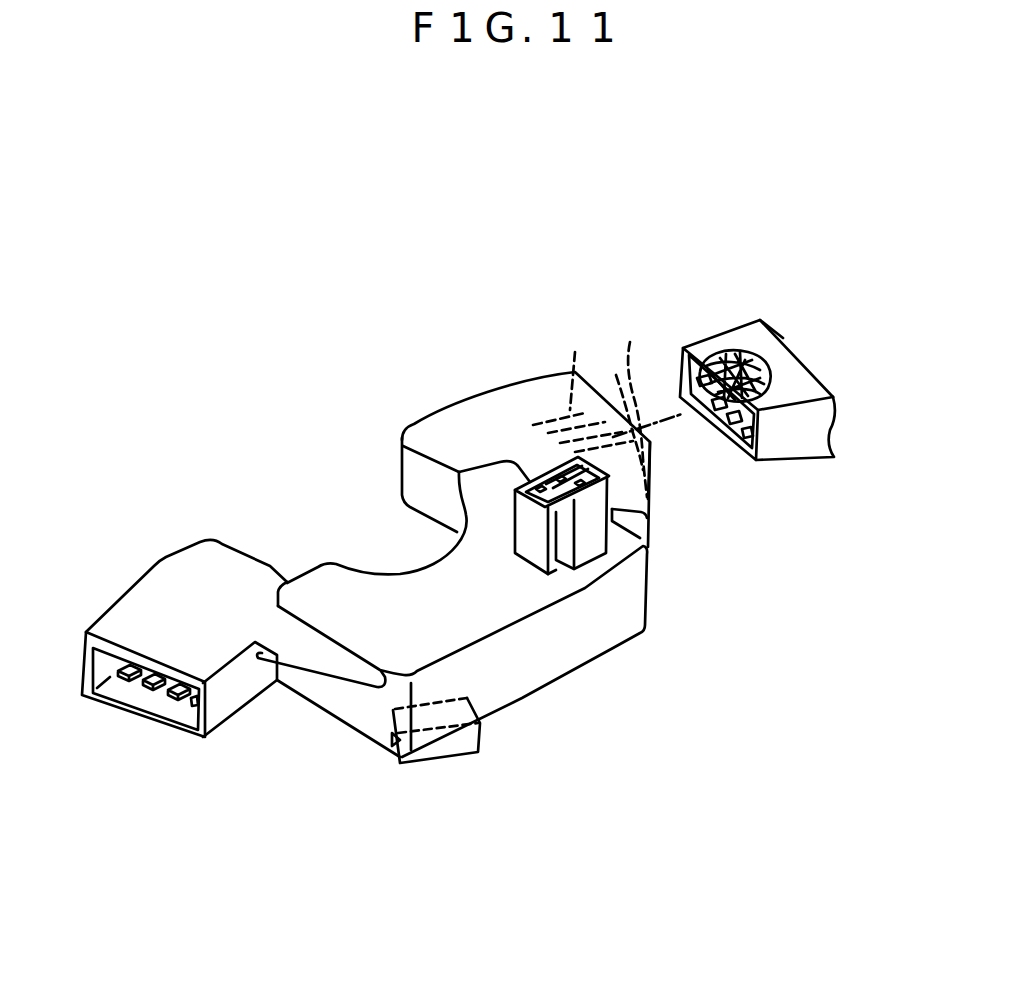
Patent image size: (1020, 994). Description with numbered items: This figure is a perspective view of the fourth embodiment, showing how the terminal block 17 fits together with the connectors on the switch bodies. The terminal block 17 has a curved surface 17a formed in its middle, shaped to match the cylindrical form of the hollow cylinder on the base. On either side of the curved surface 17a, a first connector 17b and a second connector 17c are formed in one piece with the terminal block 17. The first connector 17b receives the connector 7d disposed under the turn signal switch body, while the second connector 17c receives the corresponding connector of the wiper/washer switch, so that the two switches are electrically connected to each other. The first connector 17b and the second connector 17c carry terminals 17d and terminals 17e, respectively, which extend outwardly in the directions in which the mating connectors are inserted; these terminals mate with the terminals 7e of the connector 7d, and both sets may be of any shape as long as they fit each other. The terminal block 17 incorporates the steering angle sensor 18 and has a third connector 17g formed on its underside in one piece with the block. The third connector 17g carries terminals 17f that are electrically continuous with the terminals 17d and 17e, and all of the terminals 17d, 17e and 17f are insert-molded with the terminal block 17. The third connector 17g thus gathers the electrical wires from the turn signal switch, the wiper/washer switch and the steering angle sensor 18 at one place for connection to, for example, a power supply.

The terminal block 17 is at (584, 677).
The curved surface 17a is at (395, 574).
The first connector 17b is at (652, 470).
The second connector 17c is at (174, 733).
The terminals 17d is at (616, 375).
The terminals 17e is at (172, 695).
The terminals 17f is at (575, 478).
The third connector 17g is at (518, 522).
The steering angle sensor 18 is at (436, 764).
The connector 7d is at (735, 340).
The terminals 7e is at (776, 382).